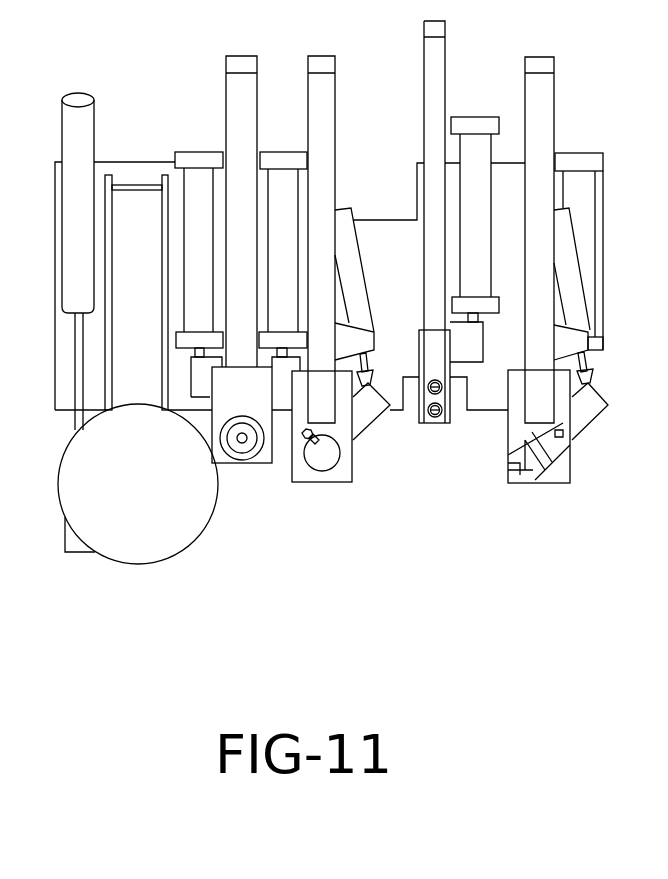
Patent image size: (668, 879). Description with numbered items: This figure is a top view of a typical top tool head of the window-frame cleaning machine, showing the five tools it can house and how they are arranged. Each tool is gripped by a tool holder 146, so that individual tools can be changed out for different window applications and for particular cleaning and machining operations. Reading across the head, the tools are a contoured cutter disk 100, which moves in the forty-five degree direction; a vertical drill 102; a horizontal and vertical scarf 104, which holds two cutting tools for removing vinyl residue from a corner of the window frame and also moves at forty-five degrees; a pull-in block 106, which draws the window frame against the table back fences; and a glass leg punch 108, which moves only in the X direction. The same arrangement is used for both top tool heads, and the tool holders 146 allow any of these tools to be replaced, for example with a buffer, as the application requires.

The cutter disk 100 is at (115, 562).
The vertical drill 102 is at (255, 463).
The horizontal and vertical scarf 104 is at (340, 482).
The pull-in block 106 is at (450, 425).
The glass leg punch 108 is at (560, 483).
The tool holders 146 is at (157, 563).